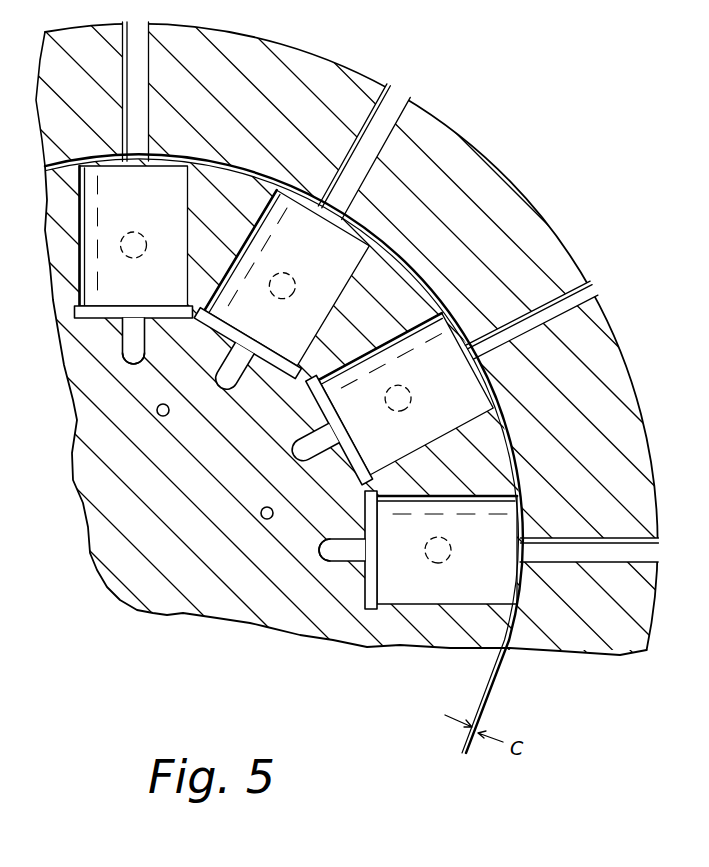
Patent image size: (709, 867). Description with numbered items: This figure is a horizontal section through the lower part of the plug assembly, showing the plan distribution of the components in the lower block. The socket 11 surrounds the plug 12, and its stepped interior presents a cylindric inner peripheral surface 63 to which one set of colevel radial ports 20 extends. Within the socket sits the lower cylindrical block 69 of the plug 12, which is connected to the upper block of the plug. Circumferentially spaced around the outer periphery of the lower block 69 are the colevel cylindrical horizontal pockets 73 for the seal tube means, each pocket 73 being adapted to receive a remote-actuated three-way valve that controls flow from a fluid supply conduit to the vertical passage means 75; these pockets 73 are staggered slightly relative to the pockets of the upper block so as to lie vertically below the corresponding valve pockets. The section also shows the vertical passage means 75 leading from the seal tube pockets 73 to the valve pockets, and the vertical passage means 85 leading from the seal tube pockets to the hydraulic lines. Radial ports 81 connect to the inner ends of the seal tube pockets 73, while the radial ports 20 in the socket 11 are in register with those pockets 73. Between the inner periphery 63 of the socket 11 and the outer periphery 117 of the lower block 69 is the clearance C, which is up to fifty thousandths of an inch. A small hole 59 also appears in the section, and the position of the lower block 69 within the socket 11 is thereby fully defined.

The socket 11 is at (535, 254).
The plug 12 is at (150, 588).
The radial ports 20 is at (393, 106).
The vent holes 59 is at (155, 413).
The inner peripheral surface 63 is at (498, 658).
The lower cylindrical block 69 is at (197, 594).
The pockets 73 is at (82, 208).
The vertical passage means 75 is at (118, 258).
The radial ports 81 is at (132, 322).
The vertical passage means 85 is at (123, 360).
The outer periphery 117 is at (500, 682).